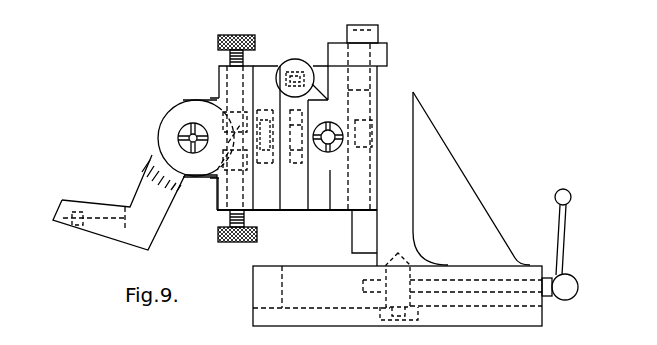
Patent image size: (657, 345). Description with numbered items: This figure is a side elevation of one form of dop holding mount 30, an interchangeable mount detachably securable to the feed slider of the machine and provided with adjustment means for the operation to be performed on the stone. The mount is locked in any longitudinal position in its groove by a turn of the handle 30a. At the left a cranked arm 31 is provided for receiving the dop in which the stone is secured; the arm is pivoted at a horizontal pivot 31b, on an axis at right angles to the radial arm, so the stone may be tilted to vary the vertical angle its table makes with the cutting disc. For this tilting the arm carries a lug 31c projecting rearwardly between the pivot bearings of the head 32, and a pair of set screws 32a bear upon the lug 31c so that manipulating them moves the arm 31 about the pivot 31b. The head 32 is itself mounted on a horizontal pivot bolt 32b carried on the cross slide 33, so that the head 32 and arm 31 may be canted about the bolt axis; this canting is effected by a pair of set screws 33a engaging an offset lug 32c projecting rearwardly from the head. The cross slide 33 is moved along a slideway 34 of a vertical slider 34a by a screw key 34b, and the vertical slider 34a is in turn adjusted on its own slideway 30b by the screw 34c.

The dop holding mount 30 is at (428, 103).
The handle 30a is at (563, 222).
The slideway 30b is at (372, 219).
The cranked arm 31 is at (150, 231).
The horizontal pivot 31b is at (185, 127).
The lug 31c is at (211, 169).
The head 32 is at (222, 203).
The set screws 32a is at (254, 37).
The horizontal pivot bolt 32b is at (279, 210).
The offset lug 32c is at (288, 64).
The cross slide 33 is at (307, 210).
The set screws 33a is at (305, 60).
The slideway 34 is at (308, 180).
The vertical slider 34a is at (330, 210).
The screw key 34b is at (338, 125).
The screw 34c is at (380, 37).